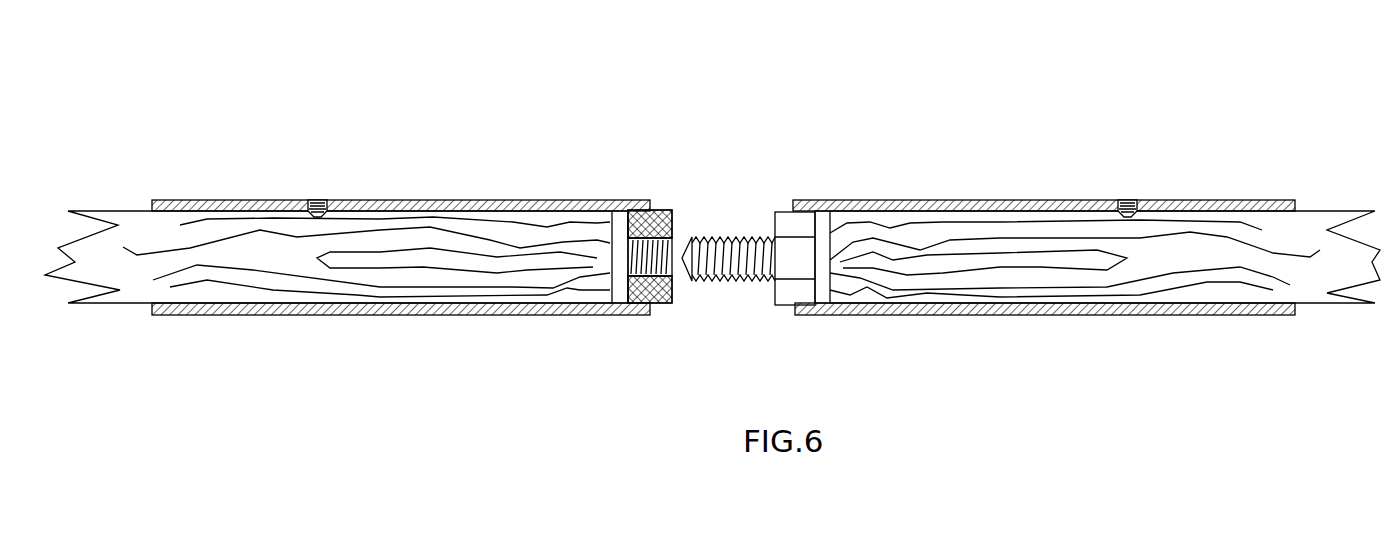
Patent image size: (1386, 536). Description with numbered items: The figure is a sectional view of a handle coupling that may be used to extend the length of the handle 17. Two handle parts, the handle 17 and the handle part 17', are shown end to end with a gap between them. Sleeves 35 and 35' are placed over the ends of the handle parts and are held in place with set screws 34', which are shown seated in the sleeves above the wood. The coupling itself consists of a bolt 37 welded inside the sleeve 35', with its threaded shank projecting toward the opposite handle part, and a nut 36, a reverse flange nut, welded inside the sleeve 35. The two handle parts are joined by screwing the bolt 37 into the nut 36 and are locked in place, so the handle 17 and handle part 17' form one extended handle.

The handle 17 is at (1105, 222).
The handle part 17' is at (328, 177).
The set screws 34' is at (722, 134).
The sleeve 35 is at (412, 186).
The sleeve 35' is at (1044, 186).
The reverse flange nut 36 is at (657, 214).
The bolt 37 is at (788, 225).